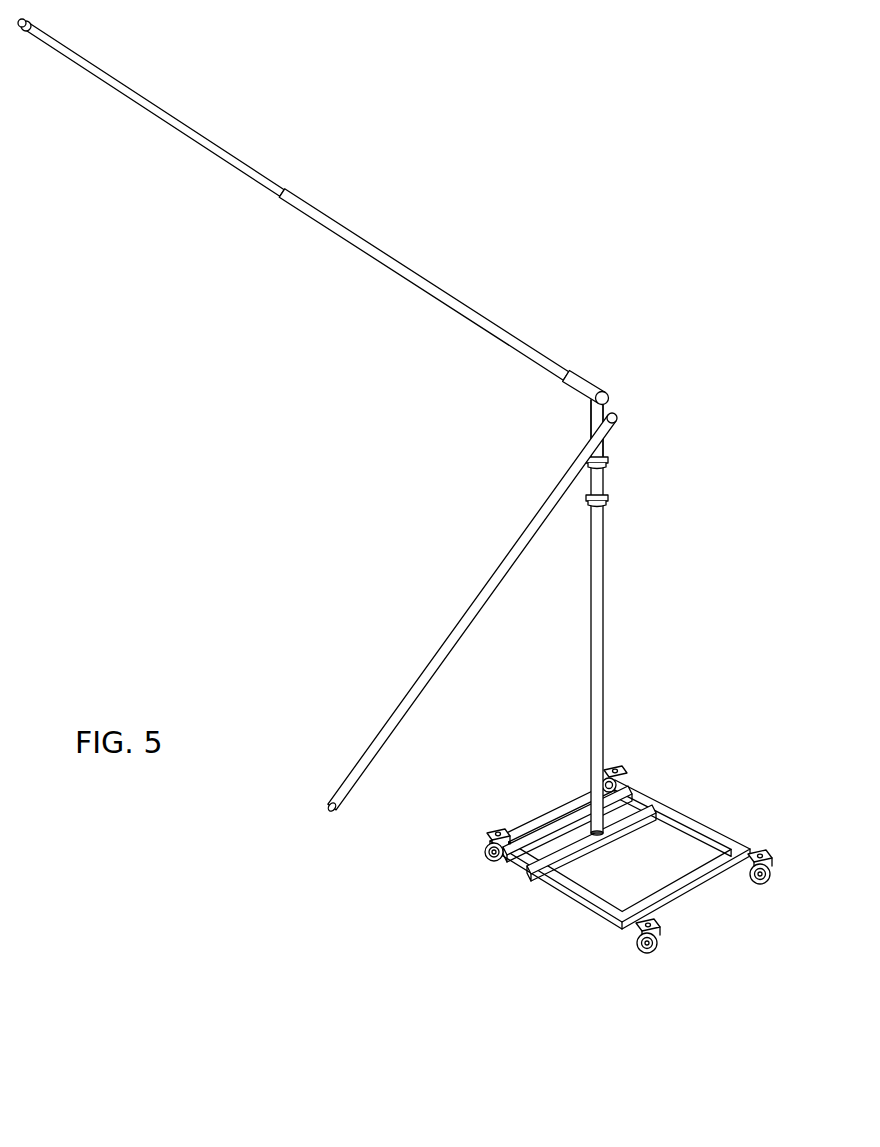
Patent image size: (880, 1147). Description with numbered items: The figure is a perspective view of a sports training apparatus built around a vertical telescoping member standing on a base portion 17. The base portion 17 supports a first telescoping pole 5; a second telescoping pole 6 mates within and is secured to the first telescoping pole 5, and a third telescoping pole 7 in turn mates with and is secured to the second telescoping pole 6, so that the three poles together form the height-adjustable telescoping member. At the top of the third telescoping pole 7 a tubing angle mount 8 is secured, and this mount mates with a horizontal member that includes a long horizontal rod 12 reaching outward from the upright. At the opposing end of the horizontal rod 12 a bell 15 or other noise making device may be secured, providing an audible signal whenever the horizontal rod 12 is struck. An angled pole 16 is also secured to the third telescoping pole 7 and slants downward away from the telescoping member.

The first telescoping pole 5 is at (596, 640).
The second telescoping pole 6 is at (598, 480).
The third telescoping pole 7 is at (596, 415).
The tubing angle mount 8 is at (583, 385).
The horizontal rod 12 is at (346, 212).
The bell 15 is at (22, 36).
The angled pole 16 is at (472, 613).
The base portion 17 is at (693, 830).